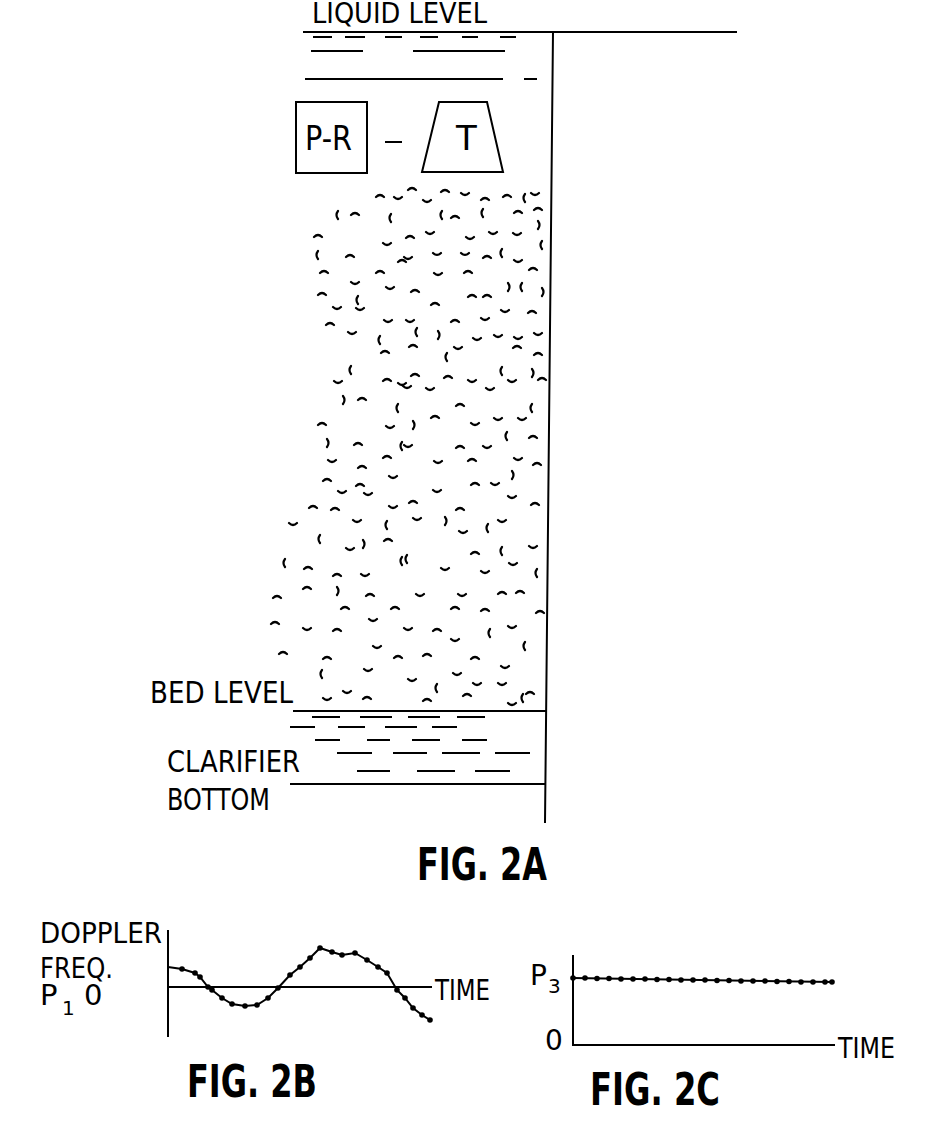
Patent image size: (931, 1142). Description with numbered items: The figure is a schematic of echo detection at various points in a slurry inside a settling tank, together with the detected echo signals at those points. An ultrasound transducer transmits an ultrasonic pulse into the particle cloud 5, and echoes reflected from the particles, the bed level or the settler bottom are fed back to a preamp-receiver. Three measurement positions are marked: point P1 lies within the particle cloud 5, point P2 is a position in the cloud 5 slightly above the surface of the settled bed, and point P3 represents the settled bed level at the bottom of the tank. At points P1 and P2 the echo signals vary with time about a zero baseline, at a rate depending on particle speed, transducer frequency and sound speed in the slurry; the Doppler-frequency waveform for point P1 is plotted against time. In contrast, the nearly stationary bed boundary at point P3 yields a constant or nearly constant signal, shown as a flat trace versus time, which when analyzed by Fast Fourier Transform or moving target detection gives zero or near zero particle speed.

The particle cloud 5 is at (379, 428).
The point P1 is at (443, 397).
The point P2 is at (508, 668).
The point P3 is at (547, 713).